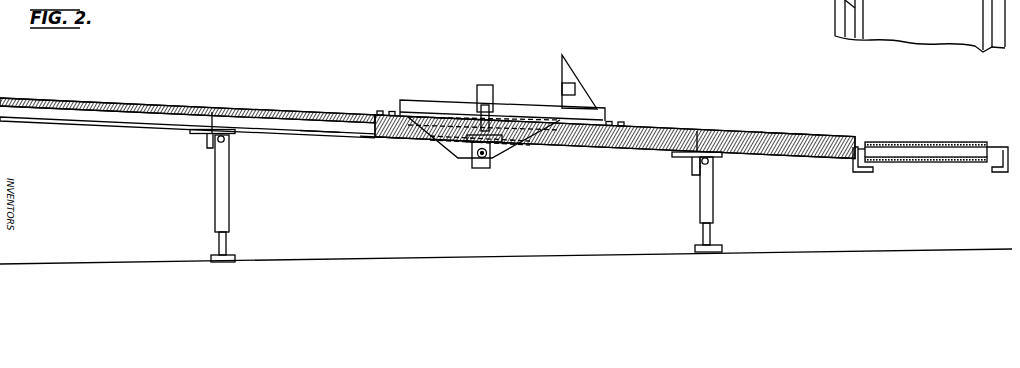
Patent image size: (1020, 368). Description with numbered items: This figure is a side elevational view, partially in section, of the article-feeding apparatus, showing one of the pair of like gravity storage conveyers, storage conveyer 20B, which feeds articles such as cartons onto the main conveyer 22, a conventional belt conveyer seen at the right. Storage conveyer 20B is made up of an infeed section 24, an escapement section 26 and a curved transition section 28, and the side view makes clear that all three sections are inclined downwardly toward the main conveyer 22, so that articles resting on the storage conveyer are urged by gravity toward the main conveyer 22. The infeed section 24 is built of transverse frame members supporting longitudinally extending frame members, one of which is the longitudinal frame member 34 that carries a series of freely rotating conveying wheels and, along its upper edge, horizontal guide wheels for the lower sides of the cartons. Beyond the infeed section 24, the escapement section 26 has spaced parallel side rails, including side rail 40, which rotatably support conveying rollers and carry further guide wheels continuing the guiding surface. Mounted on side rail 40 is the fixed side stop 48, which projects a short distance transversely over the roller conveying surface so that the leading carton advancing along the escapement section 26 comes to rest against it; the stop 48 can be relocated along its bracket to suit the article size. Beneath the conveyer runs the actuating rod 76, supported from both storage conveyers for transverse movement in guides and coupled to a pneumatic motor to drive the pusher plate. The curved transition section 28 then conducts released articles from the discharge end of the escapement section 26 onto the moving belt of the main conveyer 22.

The storage conveyer 20B is at (655, 118).
The main conveyer 22 is at (935, 140).
The infeed section 24 is at (87, 98).
The escapement section 26 is at (383, 138).
The curved transition section 28 is at (784, 131).
The longitudinal frame member 34 is at (65, 120).
The side rail 40 is at (318, 128).
The fixed side stop 48 is at (570, 74).
The actuating rod 76 is at (486, 158).